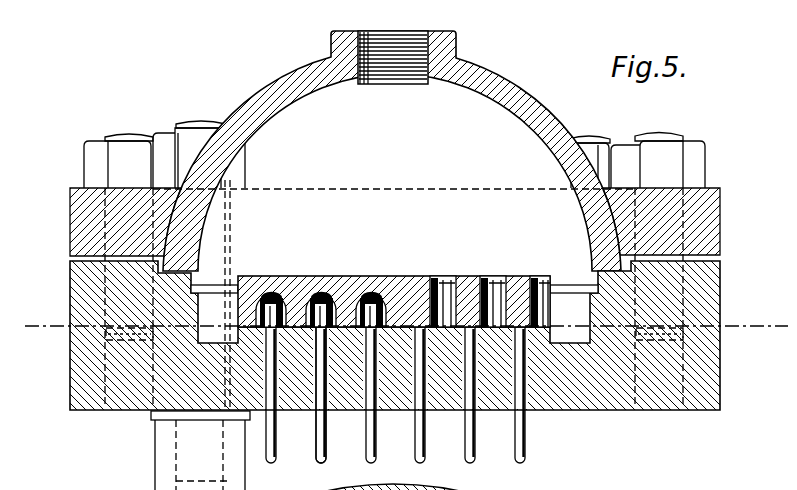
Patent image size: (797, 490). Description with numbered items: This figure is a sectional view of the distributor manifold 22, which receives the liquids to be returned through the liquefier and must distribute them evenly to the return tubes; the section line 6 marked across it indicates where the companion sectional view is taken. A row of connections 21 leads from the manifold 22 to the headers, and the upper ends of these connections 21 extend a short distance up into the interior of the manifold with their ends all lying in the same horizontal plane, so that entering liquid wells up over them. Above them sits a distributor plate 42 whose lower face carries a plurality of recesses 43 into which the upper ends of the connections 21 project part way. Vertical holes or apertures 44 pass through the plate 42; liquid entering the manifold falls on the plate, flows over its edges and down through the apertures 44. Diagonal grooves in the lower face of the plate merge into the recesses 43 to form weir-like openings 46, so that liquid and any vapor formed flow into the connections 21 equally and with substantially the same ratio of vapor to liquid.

The connection 21 is at (507, 434).
The distributor manifold 22 is at (700, 290).
The distributor plate 42 is at (343, 276).
The recess 43 is at (293, 288).
The vertical hole or aperture 44 is at (434, 272).
The weir-like opening 46 is at (301, 321).
The section line 6— 6 is at (32, 342).